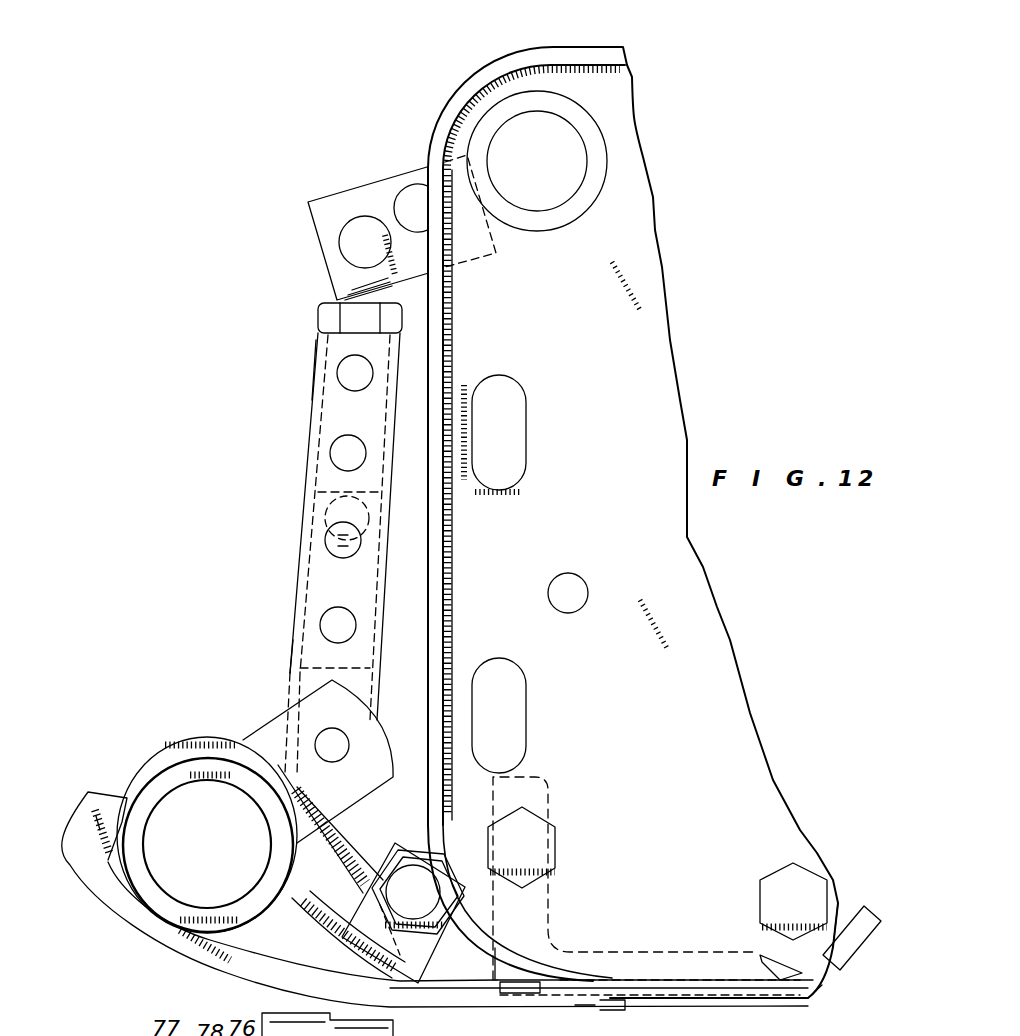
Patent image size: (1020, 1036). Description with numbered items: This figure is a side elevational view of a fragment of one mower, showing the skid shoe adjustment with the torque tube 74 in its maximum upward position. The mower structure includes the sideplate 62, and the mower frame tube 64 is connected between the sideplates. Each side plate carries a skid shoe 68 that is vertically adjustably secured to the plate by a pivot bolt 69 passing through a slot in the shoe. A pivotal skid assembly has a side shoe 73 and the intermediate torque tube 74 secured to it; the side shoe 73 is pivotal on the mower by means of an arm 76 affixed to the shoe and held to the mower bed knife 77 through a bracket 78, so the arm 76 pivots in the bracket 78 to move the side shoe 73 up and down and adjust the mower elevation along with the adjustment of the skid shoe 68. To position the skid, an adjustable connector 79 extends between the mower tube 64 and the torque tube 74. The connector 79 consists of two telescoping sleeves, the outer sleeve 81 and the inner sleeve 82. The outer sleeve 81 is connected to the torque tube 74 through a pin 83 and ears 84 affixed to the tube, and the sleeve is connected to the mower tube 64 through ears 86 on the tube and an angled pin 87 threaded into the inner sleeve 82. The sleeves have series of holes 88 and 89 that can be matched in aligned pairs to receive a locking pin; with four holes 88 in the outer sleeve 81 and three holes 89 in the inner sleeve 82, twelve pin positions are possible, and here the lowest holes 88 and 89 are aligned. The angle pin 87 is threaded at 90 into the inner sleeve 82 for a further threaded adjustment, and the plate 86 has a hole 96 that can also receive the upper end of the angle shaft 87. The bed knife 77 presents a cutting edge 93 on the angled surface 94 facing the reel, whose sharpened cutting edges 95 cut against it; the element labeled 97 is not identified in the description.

The sideplate 62 is at (738, 725).
The mower frame tube 64 is at (552, 224).
The skid shoe 68 is at (580, 1010).
The pivot bolt 69 is at (412, 880).
The side shoe 73 is at (160, 932).
The torque tube 74 is at (185, 748).
The arm 76 is at (640, 965).
The bed knife 77 is at (497, 953).
The bracket 78 is at (623, 1008).
The adjustable connector 79 is at (297, 590).
The outer sleeve 81 is at (292, 676).
The inner sleeve 82 is at (318, 493).
The pin 83 is at (327, 732).
The ears 84 is at (263, 732).
The ears 86 is at (350, 207).
The angled pin 87 is at (345, 245).
The holes 88 is at (365, 460).
The holes 89 is at (337, 610).
The threaded portion 90 is at (333, 298).
The cutting edge 93 is at (852, 972).
The angled surface 94 is at (843, 987).
The cutting edges 95 is at (833, 950).
The hole 96 is at (417, 190).
The pin 97 is at (880, 932).